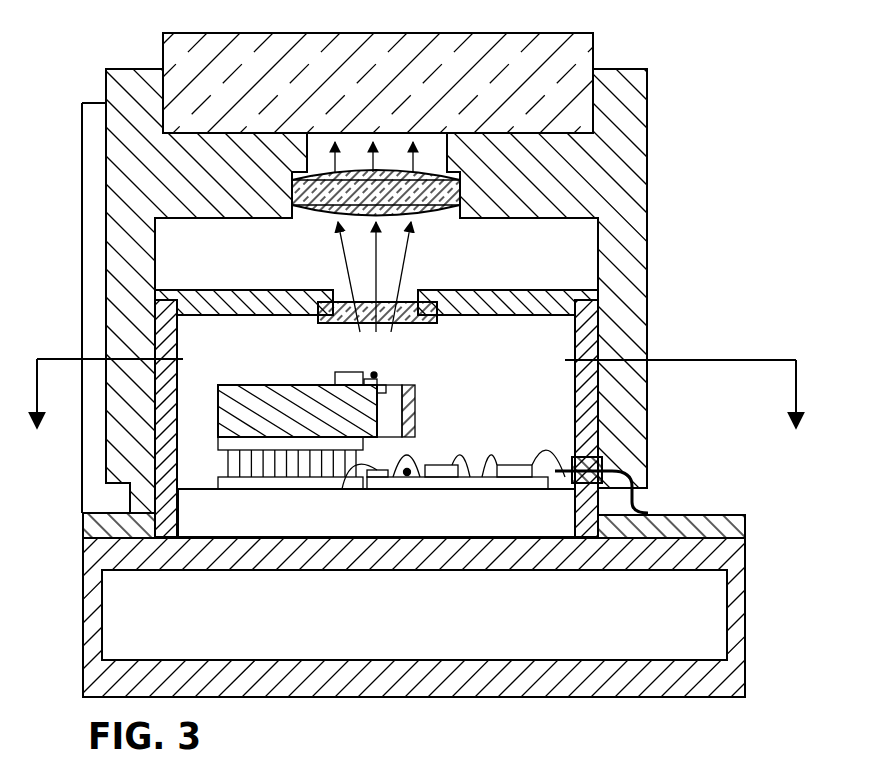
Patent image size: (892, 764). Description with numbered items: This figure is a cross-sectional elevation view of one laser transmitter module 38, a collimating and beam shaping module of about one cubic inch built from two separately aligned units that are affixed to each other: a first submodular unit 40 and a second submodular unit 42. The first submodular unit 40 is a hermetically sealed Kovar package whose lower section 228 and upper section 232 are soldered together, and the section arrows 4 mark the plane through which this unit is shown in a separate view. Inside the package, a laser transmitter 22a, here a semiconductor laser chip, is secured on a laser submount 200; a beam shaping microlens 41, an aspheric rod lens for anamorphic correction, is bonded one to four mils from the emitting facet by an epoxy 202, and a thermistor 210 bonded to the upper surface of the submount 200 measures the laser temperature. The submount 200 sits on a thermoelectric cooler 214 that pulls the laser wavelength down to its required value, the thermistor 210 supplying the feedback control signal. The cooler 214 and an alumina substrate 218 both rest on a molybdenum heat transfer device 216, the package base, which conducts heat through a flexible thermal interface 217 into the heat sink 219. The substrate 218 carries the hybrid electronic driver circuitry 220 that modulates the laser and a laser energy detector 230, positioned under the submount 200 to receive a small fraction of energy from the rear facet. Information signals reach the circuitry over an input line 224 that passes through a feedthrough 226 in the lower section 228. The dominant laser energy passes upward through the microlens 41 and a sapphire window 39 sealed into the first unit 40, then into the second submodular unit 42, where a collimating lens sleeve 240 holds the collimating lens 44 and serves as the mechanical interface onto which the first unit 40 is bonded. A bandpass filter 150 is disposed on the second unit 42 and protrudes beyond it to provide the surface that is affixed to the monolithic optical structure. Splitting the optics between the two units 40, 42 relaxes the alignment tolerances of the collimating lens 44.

The laser transmitter module 38 is at (68, 60).
The bandpass filter 150 is at (482, 33).
The collimating lens sleeve 240 is at (636, 175).
The second submodular unit 42 is at (446, 260).
The collimating lens 44 is at (312, 212).
The sapphire window 39 is at (343, 300).
The upper section of Kovar package 232 is at (531, 290).
The first submodular unit 40 is at (424, 395).
The lower section of package 228 is at (592, 386).
The laser submount 200 is at (247, 382).
The thermistor 210 is at (336, 373).
The epoxy 202 is at (369, 380).
The microlens 41 is at (379, 373).
The laser transmitter 22a is at (388, 388).
The thermoelectric cooler 214 is at (218, 463).
The laser energy detector 230 is at (348, 478).
The heat transfer device 216 is at (458, 521).
The flexible thermal interface 217 is at (376, 513).
The alumina substrate 218 is at (478, 468).
The hybrid electronic driver circuitry 220 is at (440, 465).
The feedthrough 226 is at (605, 458).
The input line 224 is at (638, 497).
The heat sink 219 is at (745, 605).
The section line 4- 4 is at (416, 410).